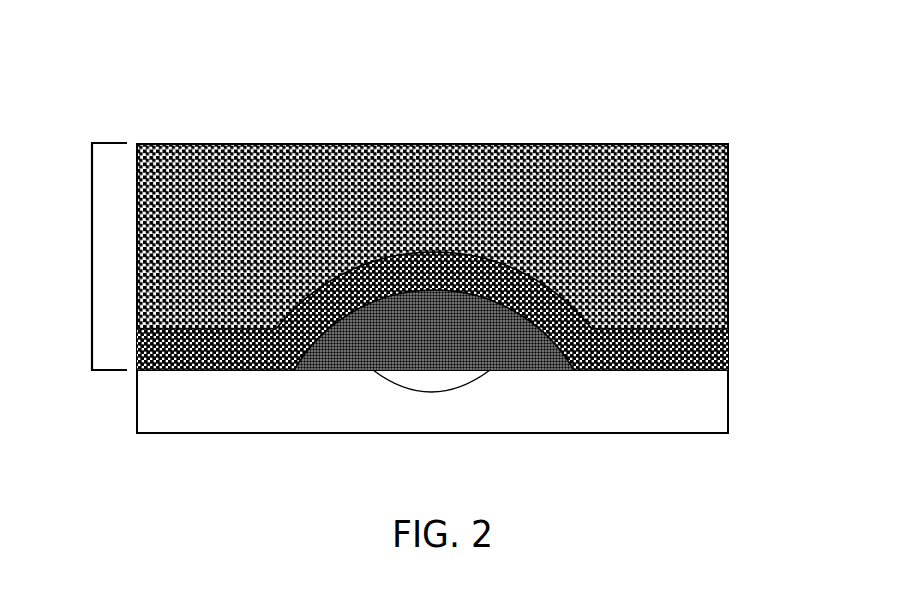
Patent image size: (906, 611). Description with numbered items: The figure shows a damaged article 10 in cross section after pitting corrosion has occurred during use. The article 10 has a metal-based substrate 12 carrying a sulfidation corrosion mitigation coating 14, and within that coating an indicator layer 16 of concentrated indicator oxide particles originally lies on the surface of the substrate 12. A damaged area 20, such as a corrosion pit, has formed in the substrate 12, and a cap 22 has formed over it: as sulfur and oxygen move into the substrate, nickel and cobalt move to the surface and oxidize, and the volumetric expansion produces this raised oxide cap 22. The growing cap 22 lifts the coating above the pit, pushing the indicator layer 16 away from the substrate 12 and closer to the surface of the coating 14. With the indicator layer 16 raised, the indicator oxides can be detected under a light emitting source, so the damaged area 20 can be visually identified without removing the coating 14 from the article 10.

The article 10 is at (602, 93).
The metal-based substrate 12 is at (728, 397).
The sulfidation corrosion mitigation coating 14 is at (92, 230).
The indicator layer 16 is at (728, 350).
The damaged area 20 is at (408, 377).
The cap 22 is at (523, 357).